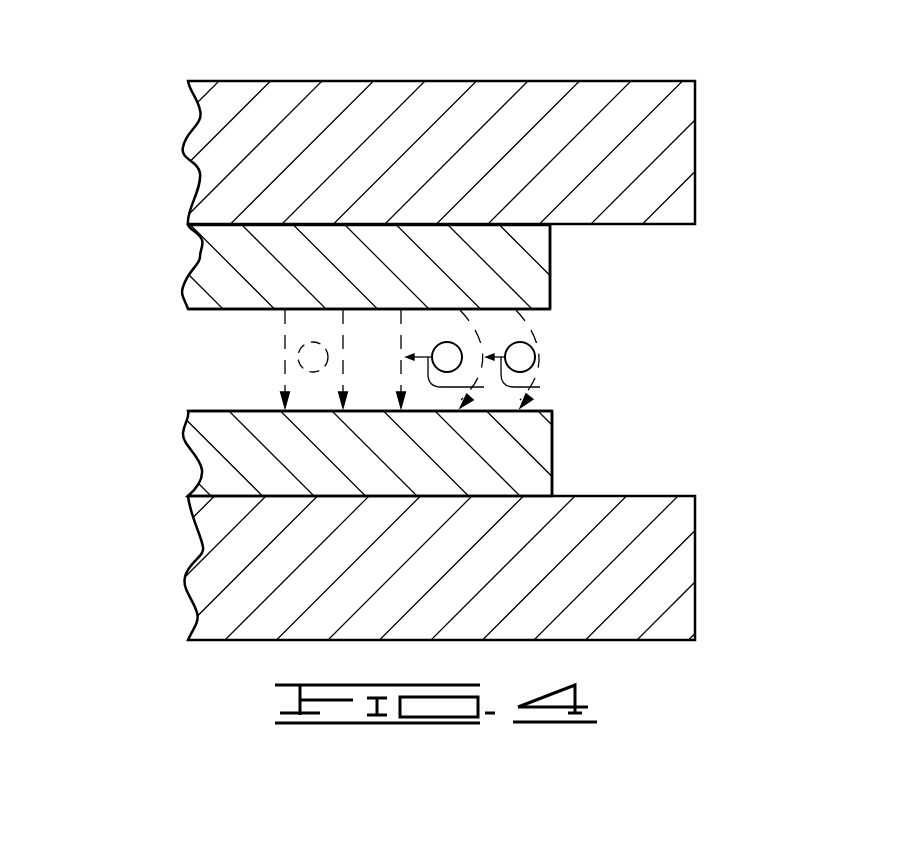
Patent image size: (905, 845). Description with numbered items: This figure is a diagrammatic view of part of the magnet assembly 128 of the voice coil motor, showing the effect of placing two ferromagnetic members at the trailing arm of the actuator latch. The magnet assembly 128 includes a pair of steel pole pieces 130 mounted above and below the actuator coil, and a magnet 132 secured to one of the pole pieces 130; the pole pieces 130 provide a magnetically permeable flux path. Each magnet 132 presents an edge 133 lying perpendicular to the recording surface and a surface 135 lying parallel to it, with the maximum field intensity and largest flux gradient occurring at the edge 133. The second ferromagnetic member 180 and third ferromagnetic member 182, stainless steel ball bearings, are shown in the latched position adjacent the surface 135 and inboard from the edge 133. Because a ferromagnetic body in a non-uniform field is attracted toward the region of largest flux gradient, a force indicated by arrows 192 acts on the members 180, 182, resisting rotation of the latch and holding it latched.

The magnet assembly 128 is at (171, 52).
The pole piece 130 is at (678, 157).
The magnet 132 is at (210, 280).
The edge 133 is at (552, 265).
The surface 135 is at (210, 312).
The second ferromagnetic member 180 is at (460, 346).
The third ferromagnetic member 182 is at (535, 356).
The arrows 192 is at (540, 387).